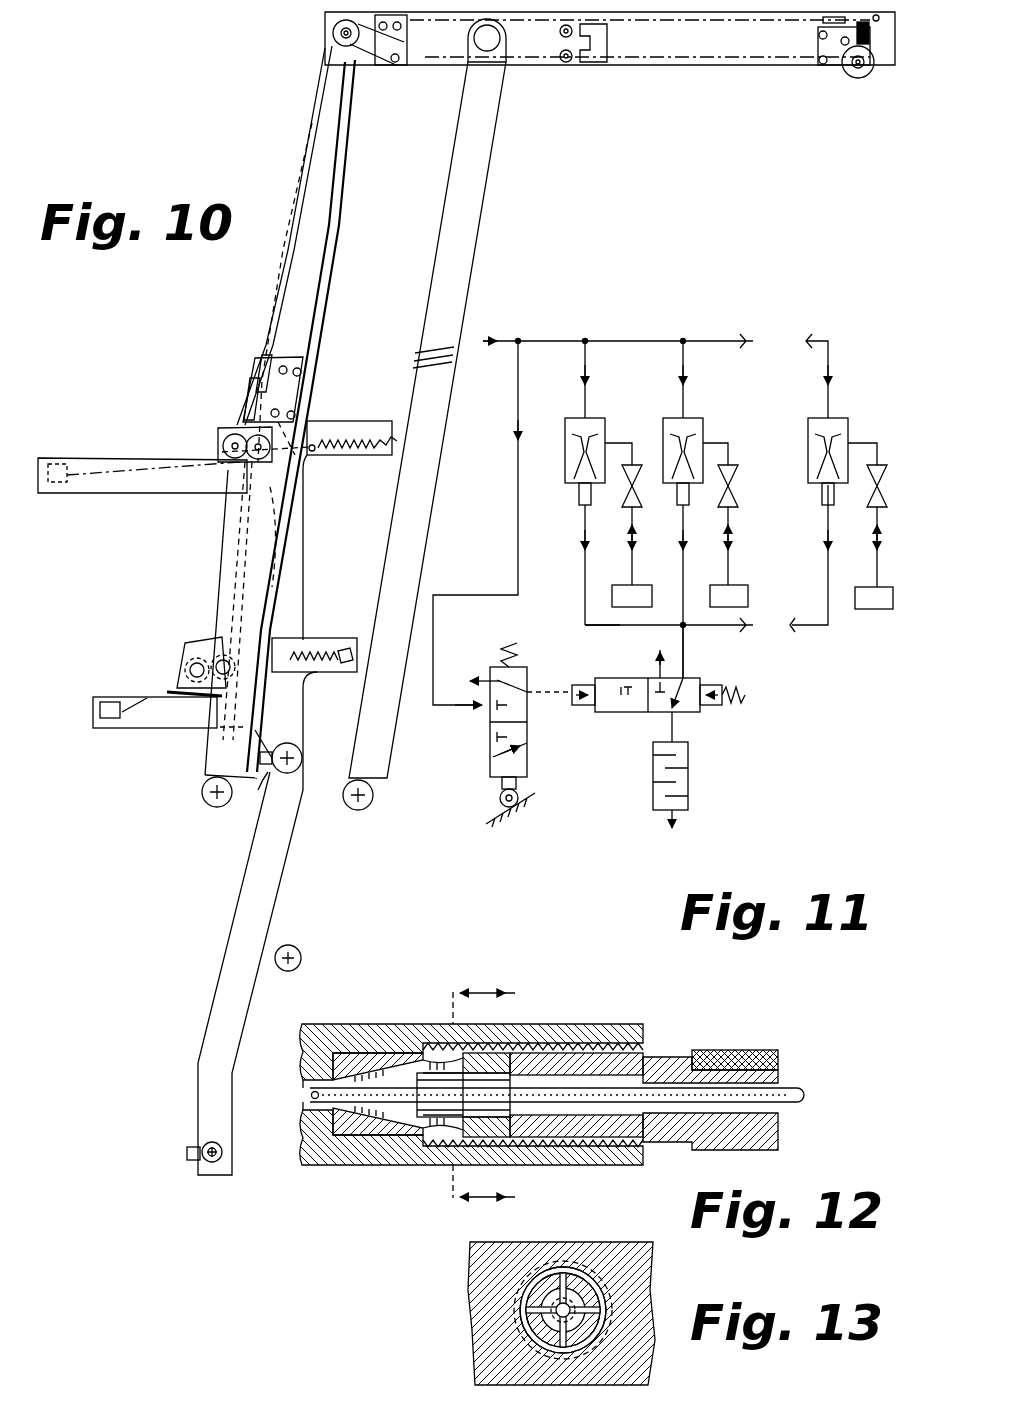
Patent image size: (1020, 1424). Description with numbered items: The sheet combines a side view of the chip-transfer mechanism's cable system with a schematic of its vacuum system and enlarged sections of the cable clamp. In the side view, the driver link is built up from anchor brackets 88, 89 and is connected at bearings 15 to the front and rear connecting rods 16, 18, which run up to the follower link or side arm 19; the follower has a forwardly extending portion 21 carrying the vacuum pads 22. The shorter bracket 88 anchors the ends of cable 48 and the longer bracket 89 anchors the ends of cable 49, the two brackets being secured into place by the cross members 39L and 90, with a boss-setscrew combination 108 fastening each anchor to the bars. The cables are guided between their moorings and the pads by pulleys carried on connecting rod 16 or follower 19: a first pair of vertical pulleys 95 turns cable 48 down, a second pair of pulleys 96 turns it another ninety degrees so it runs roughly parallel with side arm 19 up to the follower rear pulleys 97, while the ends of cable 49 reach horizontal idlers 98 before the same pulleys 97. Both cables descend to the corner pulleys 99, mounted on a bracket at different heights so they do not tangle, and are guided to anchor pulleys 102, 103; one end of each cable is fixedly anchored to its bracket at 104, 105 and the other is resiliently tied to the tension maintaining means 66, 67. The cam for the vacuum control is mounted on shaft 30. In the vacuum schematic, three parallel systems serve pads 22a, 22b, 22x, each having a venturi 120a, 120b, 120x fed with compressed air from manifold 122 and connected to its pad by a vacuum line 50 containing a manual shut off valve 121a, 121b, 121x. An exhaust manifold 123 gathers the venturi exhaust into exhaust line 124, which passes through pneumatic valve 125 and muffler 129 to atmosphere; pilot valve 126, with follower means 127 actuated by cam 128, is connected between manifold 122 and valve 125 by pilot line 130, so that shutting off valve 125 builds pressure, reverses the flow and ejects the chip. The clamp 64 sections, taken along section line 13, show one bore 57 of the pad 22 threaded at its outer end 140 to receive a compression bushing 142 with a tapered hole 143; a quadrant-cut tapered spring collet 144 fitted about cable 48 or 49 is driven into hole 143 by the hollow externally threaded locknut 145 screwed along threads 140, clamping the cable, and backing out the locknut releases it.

In FIG. 10, the bearings 15 is at (206, 804).
In FIG. 10, the front connecting rod 16 is at (345, 150).
In FIG. 10, the rear connecting rod 18 is at (492, 150).
In FIG. 10, the follower link 19 is at (333, 36).
In FIG. 10, the forwardly extending portion 21 is at (892, 63).
In FIG. 10, the shaft 30 is at (300, 952).
In FIG. 10, the shaft 39L is at (215, 1163).
In FIG. 10, the cable 48 is at (178, 672).
In FIG. 12, the cable 48 is at (592, 1078).
In FIG. 13, the cable 48 is at (466, 1332).
In FIG. 10, the cable 49 is at (112, 464).
In FIG. 12, the cable 49 is at (825, 1076).
In FIG. 13, the cable 49 is at (557, 1318).
In FIG. 11, the vacuum line 50 is at (632, 565).
In FIG. 10, the tension maintaining means 66 is at (315, 651).
In FIG. 10, the tension maintaining means 67 is at (336, 421).
In FIG. 10, the short cable anchor bracket 88 is at (278, 888).
In FIG. 10, the long cable anchor bracket 89 is at (306, 542).
In FIG. 10, the crossbar 90 is at (300, 754).
In FIG. 10, the first pair of vertical pulleys 95 is at (872, 30).
In FIG. 10, the second pair of vertical pulleys 96 is at (868, 78).
In FIG. 10, the follower rear pulleys 97 is at (338, 46).
In FIG. 10, the horizontal idlers 98 is at (823, 21).
In FIG. 10, the corner pulleys 99 is at (241, 400).
In FIG. 10, the anchor pulley 102 is at (200, 700).
In FIG. 10, the anchor pulley 103 is at (228, 440).
In FIG. 10, the anchor 104 is at (100, 702).
In FIG. 10, the anchor 105 is at (58, 463).
In FIG. 10, the boss-setscrew combination 108 is at (262, 767).
In FIG. 11, the venturi 120a is at (590, 418).
In FIG. 11, the venturi 120b is at (690, 418).
In FIG. 11, the venturi 120x is at (835, 418).
In FIG. 11, the manual shut off valve 121a is at (633, 487).
In FIG. 11, the manual shut off valve 121b is at (729, 487).
In FIG. 11, the manual shut off valve 121x is at (878, 487).
In FIG. 11, the compressed air manifold 122 is at (519, 372).
In FIG. 11, the vacuum pad 22a is at (655, 578).
In FIG. 11, the vacuum pad 22b is at (742, 590).
In FIG. 11, the vacuum pad 22x is at (886, 591).
In FIG. 11, the exhaust manifold 123 is at (613, 628).
In FIG. 11, the exhaust line 124 is at (684, 644).
In FIG. 11, the pneumatic valve 125 is at (680, 712).
In FIG. 11, the pilot valve 126 is at (528, 752).
In FIG. 11, the mechanical follower means 127 is at (518, 784).
In FIG. 11, the cam 128 is at (536, 806).
In FIG. 11, the muffler 129 is at (689, 800).
In FIG. 11, the pilot line 130 is at (545, 692).
In FIG. 12, the section line 13 is at (482, 1091).
In FIG. 12, the vacuum pad 22 is at (615, 1024).
In FIG. 13, the vacuum pad 22 is at (480, 1295).
In FIG. 12, the bore 57 is at (305, 1112).
In FIG. 13, the bore 57 is at (563, 1310).
In FIG. 12, the clamp 64 is at (768, 1030).
In FIG. 12, the threads 140 is at (632, 1150).
In FIG. 13, the threads 140 is at (605, 1273).
In FIG. 12, the compression bushing 142 is at (372, 1053).
In FIG. 12, the tapered hole 143 is at (415, 1118).
In FIG. 12, the tapered spring metal collet 144 is at (365, 1135).
In FIG. 13, the tapered spring metal collet 144 is at (530, 1290).
In FIG. 12, the locknut 145 is at (665, 1060).